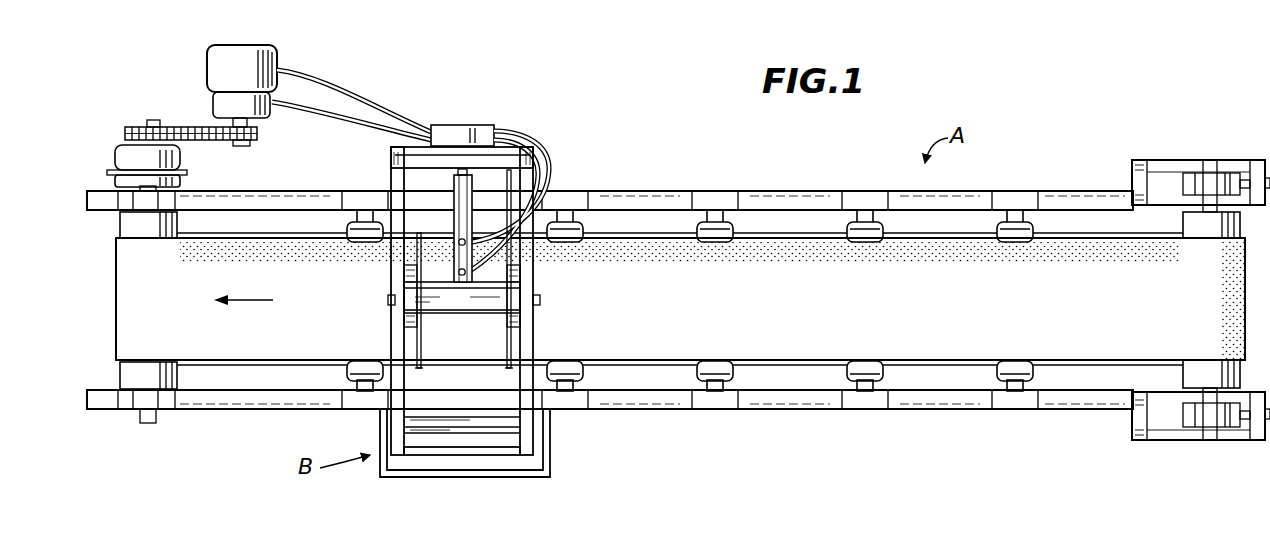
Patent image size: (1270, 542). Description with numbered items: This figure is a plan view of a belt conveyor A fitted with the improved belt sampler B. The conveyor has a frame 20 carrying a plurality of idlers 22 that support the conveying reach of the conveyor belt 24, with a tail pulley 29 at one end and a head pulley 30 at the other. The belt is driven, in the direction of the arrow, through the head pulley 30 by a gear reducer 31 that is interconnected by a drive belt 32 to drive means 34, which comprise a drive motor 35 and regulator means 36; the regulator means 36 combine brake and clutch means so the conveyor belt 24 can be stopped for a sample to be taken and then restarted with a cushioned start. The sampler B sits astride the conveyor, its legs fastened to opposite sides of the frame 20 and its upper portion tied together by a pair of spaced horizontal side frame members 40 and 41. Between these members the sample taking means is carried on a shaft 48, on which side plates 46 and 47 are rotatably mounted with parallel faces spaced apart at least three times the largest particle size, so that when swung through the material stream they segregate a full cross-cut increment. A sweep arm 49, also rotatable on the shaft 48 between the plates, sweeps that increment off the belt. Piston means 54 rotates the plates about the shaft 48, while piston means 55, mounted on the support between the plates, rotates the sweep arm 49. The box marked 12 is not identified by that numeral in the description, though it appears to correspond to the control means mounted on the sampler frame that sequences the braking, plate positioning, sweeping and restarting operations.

The control unit 12 is at (492, 98).
The frame 20 is at (1078, 406).
The idlers 22 is at (1020, 235).
The conveyor belt 24 is at (273, 368).
The tail pulley 29 is at (1183, 372).
The head pulley 30 is at (120, 372).
The gear reducer 31 is at (118, 158).
The drive belt 32 is at (207, 140).
The drive means 34 is at (240, 77).
The drive motor 35 is at (215, 68).
The regulator means 36 is at (218, 100).
The horizontal side frame member 40 is at (530, 340).
The horizontal side frame member 41 is at (397, 337).
The side plate 46 is at (415, 262).
The side plate 47 is at (533, 265).
The shaft 48 is at (388, 299).
The sweep arm 49 is at (483, 297).
The piston means 54 is at (456, 183).
The piston means 55 is at (458, 253).